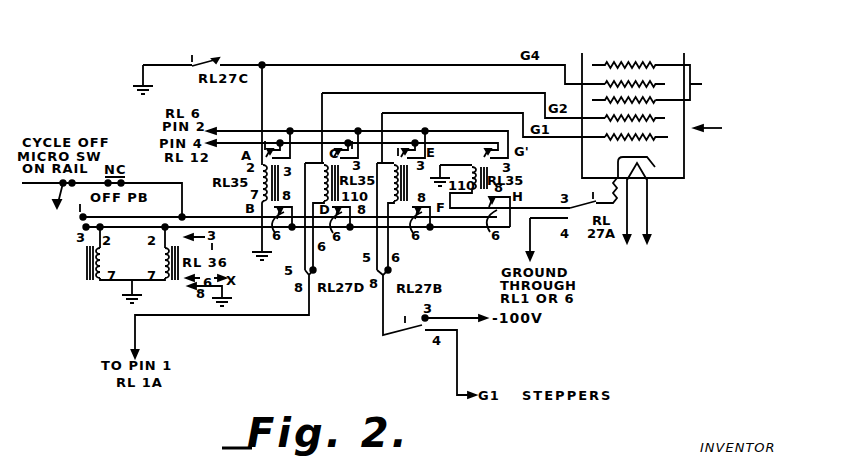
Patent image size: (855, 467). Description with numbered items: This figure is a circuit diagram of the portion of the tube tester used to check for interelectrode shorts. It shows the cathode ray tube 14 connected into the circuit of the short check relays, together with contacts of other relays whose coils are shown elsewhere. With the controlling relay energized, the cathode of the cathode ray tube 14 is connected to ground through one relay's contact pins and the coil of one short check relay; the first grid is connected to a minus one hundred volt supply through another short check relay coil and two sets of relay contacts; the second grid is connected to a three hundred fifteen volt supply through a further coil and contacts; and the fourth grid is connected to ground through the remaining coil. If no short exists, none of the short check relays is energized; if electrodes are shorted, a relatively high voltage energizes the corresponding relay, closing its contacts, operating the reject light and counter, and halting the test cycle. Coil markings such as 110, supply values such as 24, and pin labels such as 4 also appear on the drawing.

The cathode ray tube 14 is at (684, 155).
The relay RL35 coil (110 V) 110 is at (246, 184).
The 24 V supply switch 24 is at (47, 201).
The relay RL27C contact 4 is at (412, 64).